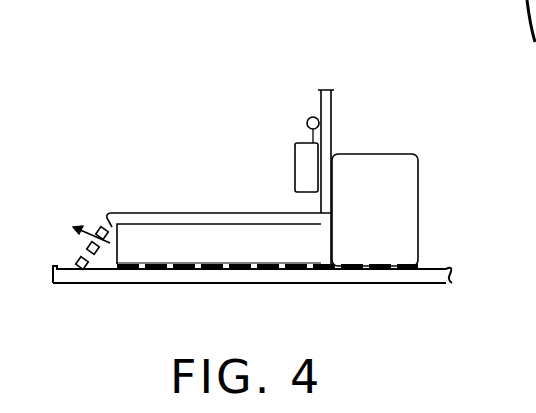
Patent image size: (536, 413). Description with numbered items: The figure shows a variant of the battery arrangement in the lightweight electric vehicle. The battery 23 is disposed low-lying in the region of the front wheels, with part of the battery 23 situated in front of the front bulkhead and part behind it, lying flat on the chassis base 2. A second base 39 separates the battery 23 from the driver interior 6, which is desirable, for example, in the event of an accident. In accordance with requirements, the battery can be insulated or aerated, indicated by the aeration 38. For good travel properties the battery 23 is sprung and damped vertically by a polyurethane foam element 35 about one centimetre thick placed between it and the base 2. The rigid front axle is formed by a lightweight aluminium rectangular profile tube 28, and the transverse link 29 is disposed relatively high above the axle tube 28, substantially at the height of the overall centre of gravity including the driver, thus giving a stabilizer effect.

The base 2 is at (87, 281).
The driver interior 6 is at (143, 138).
The battery 23 is at (170, 247).
The rectangular profile tube 28 is at (303, 170).
The transverse link 29 is at (307, 118).
The foam element 35 is at (233, 270).
The aeration 38 is at (93, 233).
The second base 39 is at (142, 211).